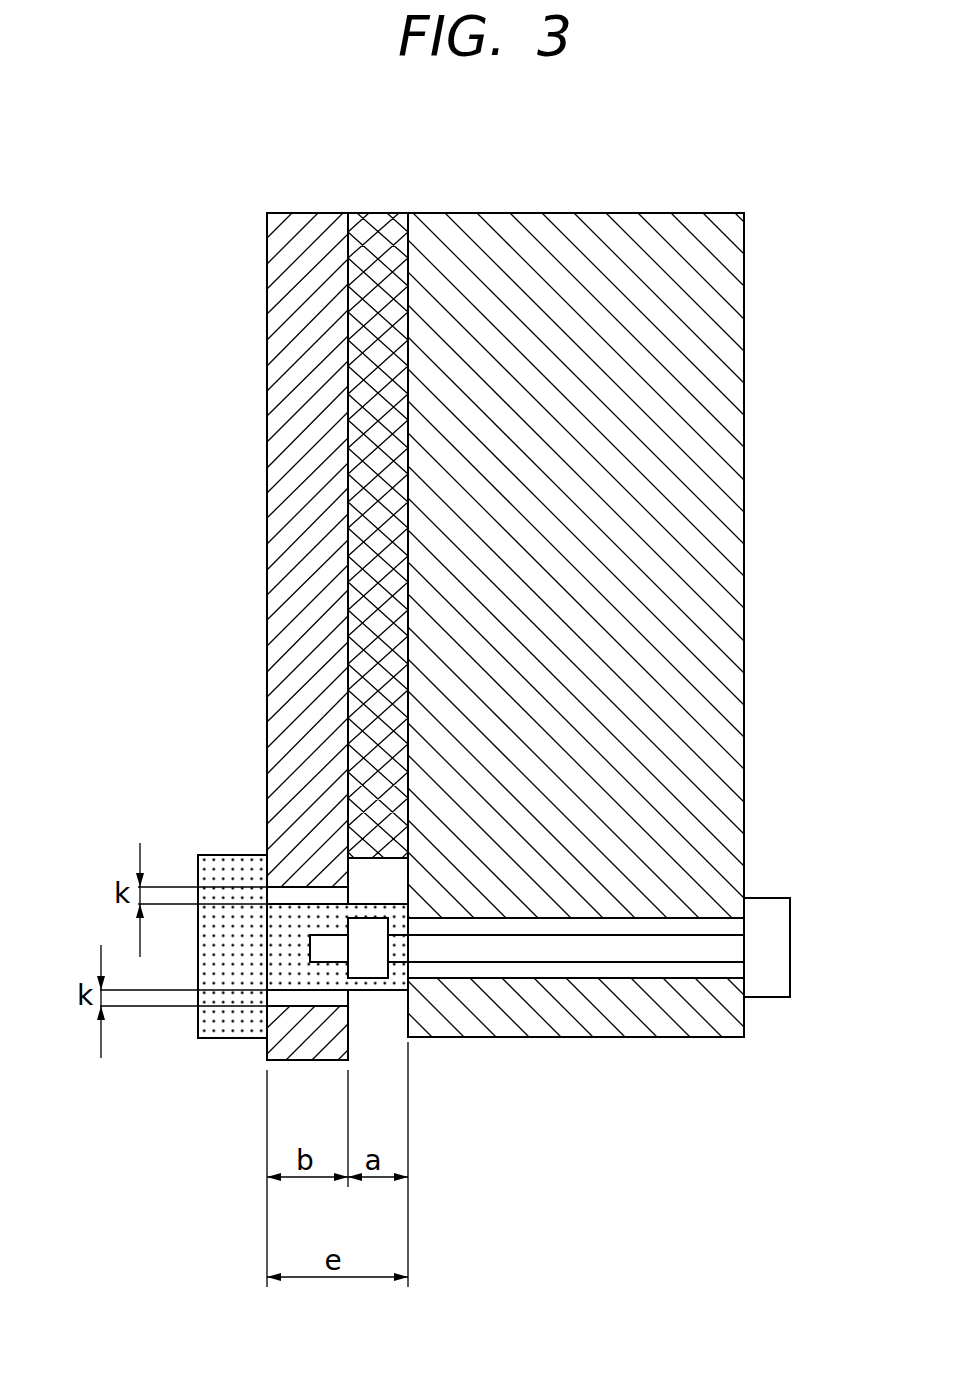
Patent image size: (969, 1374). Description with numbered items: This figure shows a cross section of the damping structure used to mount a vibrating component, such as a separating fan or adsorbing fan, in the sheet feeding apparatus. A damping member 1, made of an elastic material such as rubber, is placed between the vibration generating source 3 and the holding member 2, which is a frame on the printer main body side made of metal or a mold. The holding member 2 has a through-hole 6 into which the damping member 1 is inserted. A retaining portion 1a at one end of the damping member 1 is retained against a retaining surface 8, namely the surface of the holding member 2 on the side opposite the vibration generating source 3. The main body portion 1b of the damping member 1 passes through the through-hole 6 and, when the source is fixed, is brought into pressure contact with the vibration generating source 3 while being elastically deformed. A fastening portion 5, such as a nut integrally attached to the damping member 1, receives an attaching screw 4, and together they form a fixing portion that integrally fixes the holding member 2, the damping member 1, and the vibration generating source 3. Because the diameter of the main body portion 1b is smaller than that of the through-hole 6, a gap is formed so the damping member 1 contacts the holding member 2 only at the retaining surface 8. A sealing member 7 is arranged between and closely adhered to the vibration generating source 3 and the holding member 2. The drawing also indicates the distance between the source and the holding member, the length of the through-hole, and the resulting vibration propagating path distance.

The damping member 1 is at (299, 953).
The retaining portion 1a is at (213, 855).
The main body portion 1b is at (360, 993).
The holding member 2 is at (290, 334).
The vibration generating source 3 is at (722, 500).
The attaching screw 4 is at (772, 950).
The fastening portion 5 is at (373, 967).
The through-hole 6 is at (300, 893).
The sealing member 7 is at (385, 222).
The retaining surface 8 is at (283, 1015).